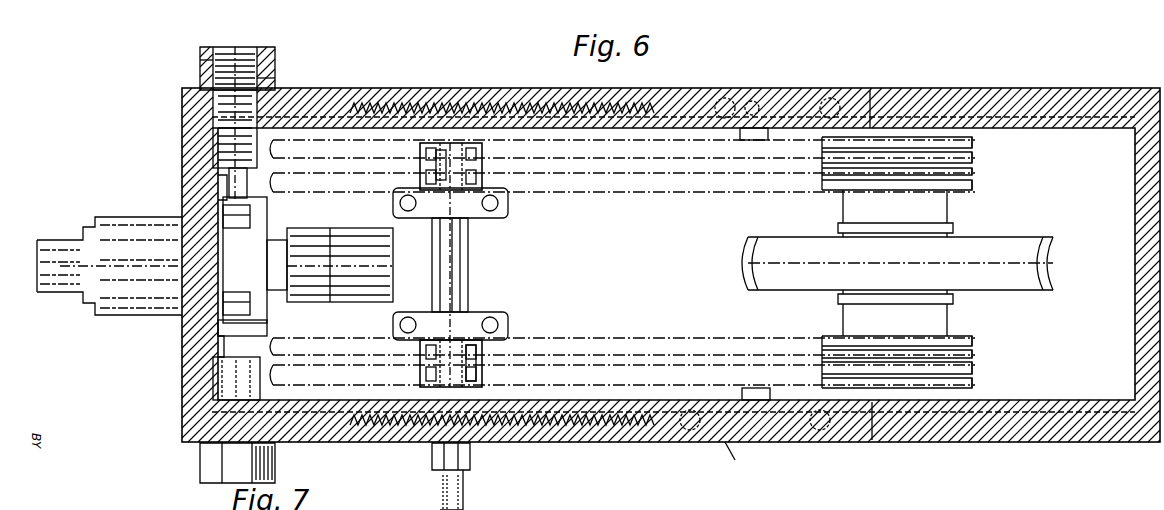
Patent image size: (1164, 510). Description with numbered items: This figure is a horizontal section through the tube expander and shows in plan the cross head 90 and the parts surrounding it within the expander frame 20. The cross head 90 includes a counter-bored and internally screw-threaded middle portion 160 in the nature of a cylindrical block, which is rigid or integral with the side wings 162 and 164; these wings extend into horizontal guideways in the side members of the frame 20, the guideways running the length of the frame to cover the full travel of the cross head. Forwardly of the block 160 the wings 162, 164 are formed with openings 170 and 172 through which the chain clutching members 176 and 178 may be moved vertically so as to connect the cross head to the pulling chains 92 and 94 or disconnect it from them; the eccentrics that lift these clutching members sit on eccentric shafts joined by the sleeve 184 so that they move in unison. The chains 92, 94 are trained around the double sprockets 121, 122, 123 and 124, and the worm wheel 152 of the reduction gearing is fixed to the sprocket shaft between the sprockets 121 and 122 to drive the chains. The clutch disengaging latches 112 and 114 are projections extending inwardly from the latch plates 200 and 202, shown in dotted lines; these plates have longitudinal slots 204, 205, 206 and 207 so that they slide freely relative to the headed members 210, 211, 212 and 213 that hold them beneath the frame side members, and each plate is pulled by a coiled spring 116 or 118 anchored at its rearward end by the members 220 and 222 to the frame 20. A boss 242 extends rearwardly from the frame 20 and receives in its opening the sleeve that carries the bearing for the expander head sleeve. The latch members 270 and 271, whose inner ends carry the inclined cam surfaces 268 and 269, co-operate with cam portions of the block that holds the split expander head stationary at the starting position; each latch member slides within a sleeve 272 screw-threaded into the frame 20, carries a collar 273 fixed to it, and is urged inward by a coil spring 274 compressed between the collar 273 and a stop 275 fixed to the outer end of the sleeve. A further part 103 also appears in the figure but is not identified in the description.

The expander frame 20 is at (230, 342).
The cross head 90 is at (268, 212).
The pulling chain 92 is at (598, 193).
The pulling chain 94 is at (604, 337).
The mounting bolt 103 is at (463, 495).
The clutch disengaging latch 112 is at (750, 136).
The clutch disengaging latch 114 is at (752, 396).
The coiled spring 116 is at (402, 128).
The coiled spring 118 is at (606, 442).
The double sprocket 121 is at (975, 182).
The double sprocket 122 is at (975, 346).
The double sprocket 123 is at (316, 150).
The double sprocket 124 is at (197, 401).
The worm wheel 152 is at (747, 262).
The middle portion 160 is at (378, 270).
The wing 162 is at (486, 216).
The wing 164 is at (486, 314).
The opening 170 is at (466, 162).
The opening 172 is at (446, 365).
The chain clutching member 176 is at (446, 160).
The chain clutching member 178 is at (478, 385).
The sleeve 184 is at (470, 262).
The latch plate 200 is at (890, 88).
The latch plate 202 is at (888, 442).
The longitudinal slot 204 is at (786, 442).
The longitudinal slot 205 is at (683, 442).
The longitudinal slot 206 is at (756, 100).
The longitudinal slot 207 is at (812, 92).
The headed member 210 is at (728, 442).
The headed member 211 is at (842, 442).
The headed member 212 is at (728, 98).
The headed member 213 is at (858, 88).
The anchoring member 220 is at (346, 442).
The anchoring member 222 is at (345, 128).
The boss 242 is at (112, 318).
The cam surface 268 is at (240, 340).
The cam surface 269 is at (218, 192).
The latch member 270 is at (188, 370).
The latch member 271 is at (225, 188).
The sleeve 272 is at (205, 62).
The collar 273 is at (225, 152).
The coil spring 274 is at (205, 86).
The stop 275 is at (230, 47).